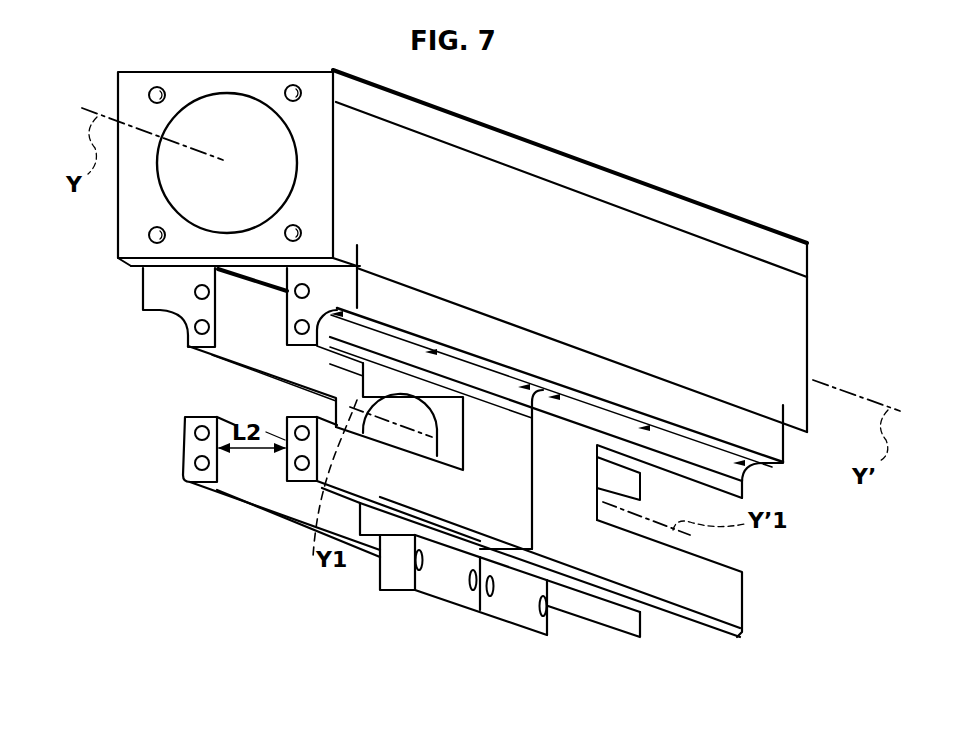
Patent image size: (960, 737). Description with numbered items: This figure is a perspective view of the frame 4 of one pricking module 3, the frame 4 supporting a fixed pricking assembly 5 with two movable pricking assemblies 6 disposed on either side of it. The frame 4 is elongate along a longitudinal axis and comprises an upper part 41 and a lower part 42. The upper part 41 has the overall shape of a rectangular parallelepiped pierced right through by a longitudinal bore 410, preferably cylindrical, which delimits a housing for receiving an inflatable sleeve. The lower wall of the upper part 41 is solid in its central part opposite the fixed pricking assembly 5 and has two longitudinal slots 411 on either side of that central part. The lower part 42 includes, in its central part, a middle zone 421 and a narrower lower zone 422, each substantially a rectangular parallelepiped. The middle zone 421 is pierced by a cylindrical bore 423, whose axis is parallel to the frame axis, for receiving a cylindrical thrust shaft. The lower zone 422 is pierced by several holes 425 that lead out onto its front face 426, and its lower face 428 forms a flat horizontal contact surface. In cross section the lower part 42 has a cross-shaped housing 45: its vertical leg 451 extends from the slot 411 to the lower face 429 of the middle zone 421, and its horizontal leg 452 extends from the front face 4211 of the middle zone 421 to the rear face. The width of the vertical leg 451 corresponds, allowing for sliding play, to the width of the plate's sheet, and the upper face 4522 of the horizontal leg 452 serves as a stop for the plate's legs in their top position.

The pricking module 3 is at (96, 206).
The frame 4 is at (634, 130).
The upper part 41 is at (58, 72).
The longitudinal bore 410 is at (218, 128).
The longitudinal slots 411 is at (264, 283).
The lower part 42 is at (58, 258).
The middle zone 421 is at (588, 490).
The front face 4211 is at (726, 595).
The lower zone 422 is at (390, 560).
The cylindrical bore 423 is at (412, 398).
The holes 425 is at (428, 570).
The front face 426 is at (527, 609).
The lower face 428 is at (495, 626).
The lower face 429 is at (265, 503).
The cross-shaped housing 45 is at (300, 384).
The vertical leg 451 is at (246, 471).
The horizontal leg 452 is at (180, 402).
The upper face 4522 is at (226, 355).
The fixed pricking assembly 5 is at (545, 667).
The movable pricking assemblies 6 is at (360, 667).